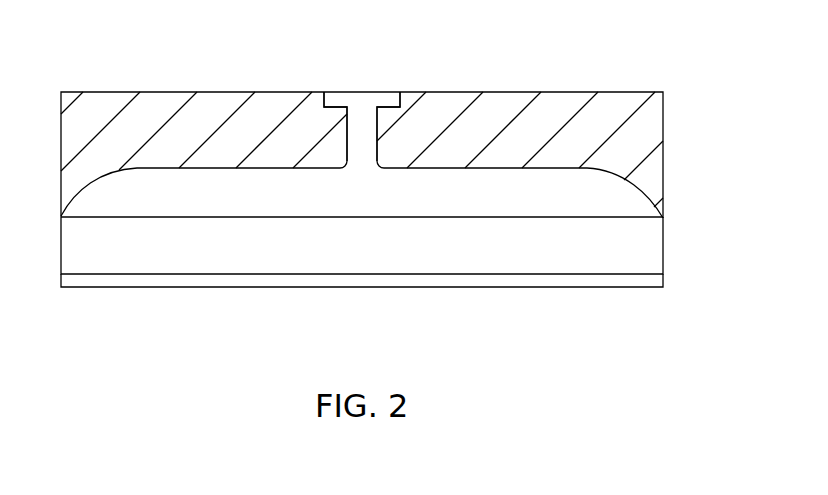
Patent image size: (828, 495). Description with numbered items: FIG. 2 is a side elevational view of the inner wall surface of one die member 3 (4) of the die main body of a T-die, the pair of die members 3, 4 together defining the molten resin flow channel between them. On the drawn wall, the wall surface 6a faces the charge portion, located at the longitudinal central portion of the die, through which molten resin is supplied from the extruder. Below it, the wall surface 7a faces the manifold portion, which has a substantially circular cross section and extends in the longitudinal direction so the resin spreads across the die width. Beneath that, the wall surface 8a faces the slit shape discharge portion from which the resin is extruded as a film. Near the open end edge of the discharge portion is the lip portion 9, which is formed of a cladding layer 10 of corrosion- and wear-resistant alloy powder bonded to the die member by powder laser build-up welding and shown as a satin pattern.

The die member 3 is at (622, 82).
The die member 4 is at (362, 155).
The wall surface facing the charge portion 6a is at (366, 112).
The wall surface facing the manifold portion 7a is at (418, 193).
The wall surface facing the discharge portion 8a is at (497, 242).
The lip portion 9 is at (362, 280).
The cladding layer 10 is at (362, 280).